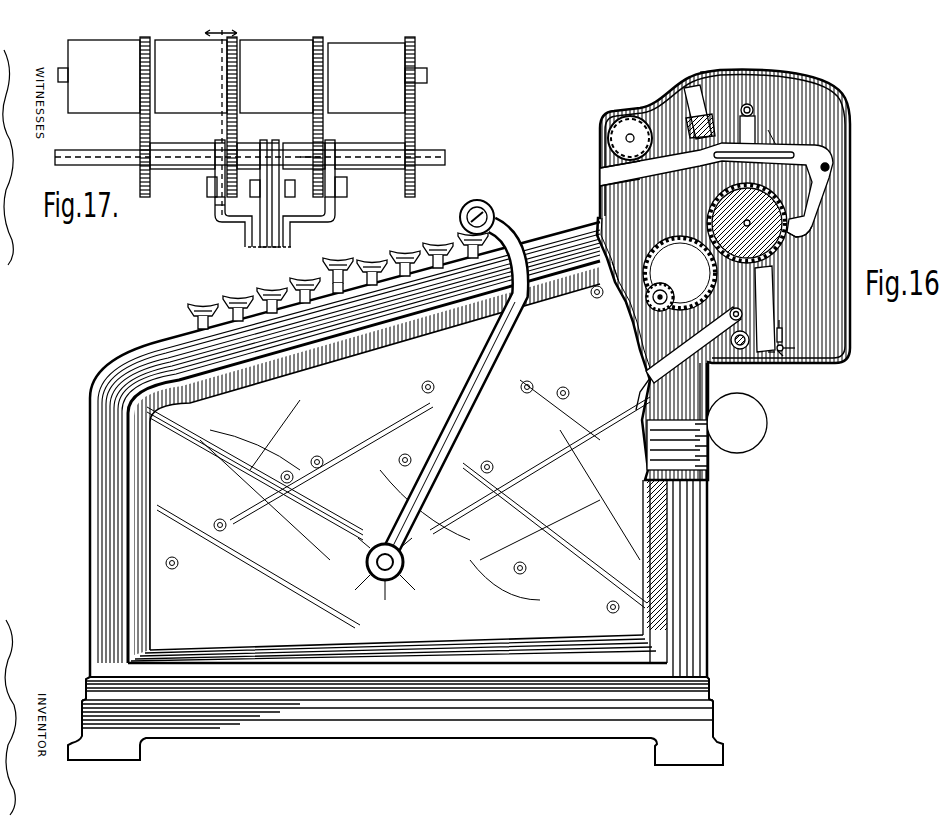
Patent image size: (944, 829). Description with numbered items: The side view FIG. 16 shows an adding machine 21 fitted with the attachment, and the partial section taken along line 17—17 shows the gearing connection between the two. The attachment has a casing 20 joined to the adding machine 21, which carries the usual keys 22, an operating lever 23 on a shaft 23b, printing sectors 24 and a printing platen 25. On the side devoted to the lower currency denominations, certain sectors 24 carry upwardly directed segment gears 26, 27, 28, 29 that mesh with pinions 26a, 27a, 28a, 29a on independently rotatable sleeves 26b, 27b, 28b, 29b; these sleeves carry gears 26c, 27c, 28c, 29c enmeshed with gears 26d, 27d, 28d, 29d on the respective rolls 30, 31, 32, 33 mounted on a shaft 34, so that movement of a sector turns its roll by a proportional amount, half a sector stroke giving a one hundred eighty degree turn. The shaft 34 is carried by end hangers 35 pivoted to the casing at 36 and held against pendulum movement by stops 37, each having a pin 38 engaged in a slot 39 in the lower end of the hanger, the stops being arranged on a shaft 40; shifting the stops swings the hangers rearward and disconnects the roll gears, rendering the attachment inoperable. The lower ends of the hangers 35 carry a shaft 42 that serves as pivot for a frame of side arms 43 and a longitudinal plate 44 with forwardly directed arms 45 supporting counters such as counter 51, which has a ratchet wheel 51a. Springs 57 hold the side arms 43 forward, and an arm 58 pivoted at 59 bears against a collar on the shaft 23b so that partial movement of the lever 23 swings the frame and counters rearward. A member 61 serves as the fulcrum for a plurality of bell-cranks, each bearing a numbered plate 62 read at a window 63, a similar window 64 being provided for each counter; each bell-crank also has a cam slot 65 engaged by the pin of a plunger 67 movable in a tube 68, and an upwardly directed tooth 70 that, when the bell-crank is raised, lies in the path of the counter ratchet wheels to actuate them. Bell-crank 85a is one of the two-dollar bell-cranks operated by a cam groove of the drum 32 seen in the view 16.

In FIG. 17, the section line 16- 16 is at (248, 141).
In FIG. 16, the section line 17 is at (690, 196).
In FIG. 16, the casing 20 is at (709, 262).
In FIG. 16, the adding machine 21 is at (98, 553).
In FIG. 16, the keys 22 is at (262, 290).
In FIG. 16, the operating lever 23 is at (455, 409).
In FIG. 16, the shaft of the operating lever 23b is at (385, 582).
In FIG. 16, the printing sectors 24 is at (673, 458).
In FIG. 16, the printing platen 25 is at (744, 428).
In FIG. 17, the segment gear 26 is at (290, 235).
In FIG. 17, the segment gear 27 is at (289, 250).
In FIG. 17, the segment gear 28 is at (262, 250).
In FIG. 17, the segment gear 29 is at (247, 230).
In FIG. 16, the segment gear 29 is at (690, 402).
In FIG. 17, the pinion 26a is at (333, 139).
In FIG. 17, the pinion 27a is at (312, 160).
In FIG. 17, the pinion 28a is at (272, 128).
In FIG. 17, the pinion 29a is at (217, 143).
In FIG. 16, the pinion 29a is at (648, 289).
In FIG. 17, the sleeve 26b is at (386, 169).
In FIG. 17, the sleeve 27b is at (340, 172).
In FIG. 17, the sleeve 28b is at (216, 184).
In FIG. 17, the sleeve 29b is at (178, 158).
In FIG. 17, the gear 26c is at (412, 187).
In FIG. 17, the gear 27c is at (343, 212).
In FIG. 17, the gear 28c is at (214, 212).
In FIG. 17, the gear 29c is at (206, 178).
In FIG. 16, the gear 29c is at (652, 302).
In FIG. 17, the gear 26d is at (407, 103).
In FIG. 17, the gear 27d is at (314, 103).
In FIG. 17, the gear 28d is at (228, 104).
In FIG. 17, the gear 29d is at (143, 101).
In FIG. 16, the gear 29d is at (762, 250).
In FIG. 17, the roll 30 is at (367, 78).
In FIG. 17, the roll 31 is at (277, 76).
In FIG. 17, the roll 32 is at (191, 76).
In FIG. 16, the roll 32 is at (817, 223).
In FIG. 17, the roll 33 is at (100, 76).
In FIG. 17, the shaft 34 is at (436, 72).
In FIG. 16, the shaft 34 is at (784, 234).
In FIG. 16, the end hangers 35 is at (770, 312).
In FIG. 16, the pivot 36 is at (716, 134).
In FIG. 16, the stop 37 is at (784, 350).
In FIG. 16, the pin 38 is at (771, 354).
In FIG. 16, the slot 39 is at (788, 343).
In FIG. 16, the shaft 40 is at (794, 350).
In FIG. 16, the shaft 42 is at (748, 352).
In FIG. 16, the side arms 43 is at (735, 282).
In FIG. 16, the plate 44 is at (697, 118).
In FIG. 16, the forwardly directed arms 45 is at (688, 124).
In FIG. 16, the counter 51 is at (599, 139).
In FIG. 16, the ratchet wheel 51a is at (620, 128).
In FIG. 16, the springs 57 is at (760, 357).
In FIG. 16, the arm 58 is at (650, 378).
In FIG. 16, the pivot 59 is at (781, 330).
In FIG. 16, the pivot pin 61 is at (833, 164).
In FIG. 16, the numbered plate 62 is at (603, 196).
In FIG. 16, the window 63 is at (602, 180).
In FIG. 16, the window 64 is at (600, 140).
In FIG. 16, the cam slot 65 is at (722, 161).
In FIG. 16, the plunger 67 is at (750, 104).
In FIG. 16, the tube 68 is at (704, 75).
In FIG. 16, the tooth 70 is at (610, 176).
In FIG. 16, the bell-crank 85a is at (812, 157).